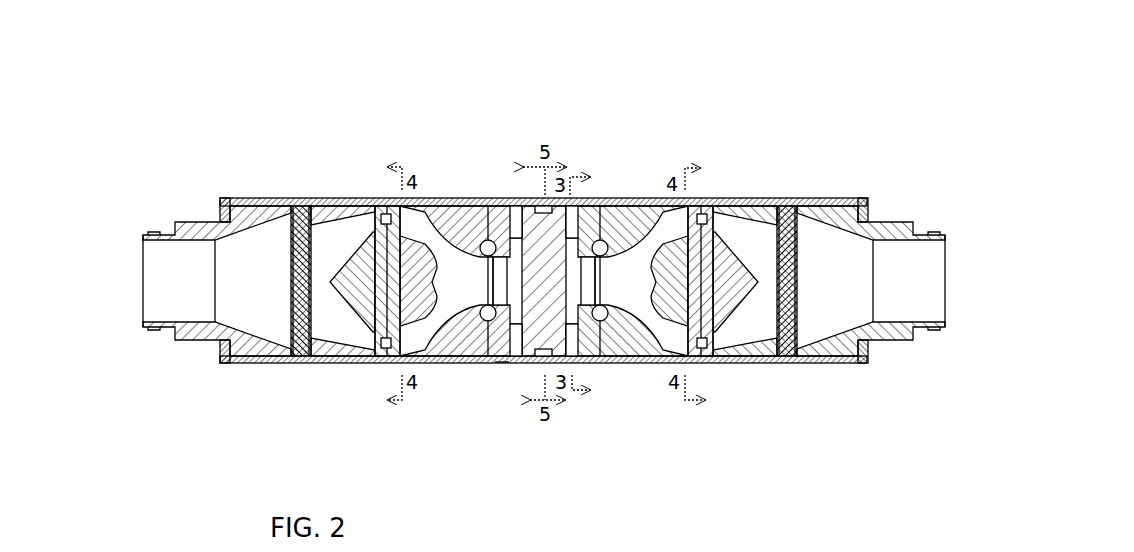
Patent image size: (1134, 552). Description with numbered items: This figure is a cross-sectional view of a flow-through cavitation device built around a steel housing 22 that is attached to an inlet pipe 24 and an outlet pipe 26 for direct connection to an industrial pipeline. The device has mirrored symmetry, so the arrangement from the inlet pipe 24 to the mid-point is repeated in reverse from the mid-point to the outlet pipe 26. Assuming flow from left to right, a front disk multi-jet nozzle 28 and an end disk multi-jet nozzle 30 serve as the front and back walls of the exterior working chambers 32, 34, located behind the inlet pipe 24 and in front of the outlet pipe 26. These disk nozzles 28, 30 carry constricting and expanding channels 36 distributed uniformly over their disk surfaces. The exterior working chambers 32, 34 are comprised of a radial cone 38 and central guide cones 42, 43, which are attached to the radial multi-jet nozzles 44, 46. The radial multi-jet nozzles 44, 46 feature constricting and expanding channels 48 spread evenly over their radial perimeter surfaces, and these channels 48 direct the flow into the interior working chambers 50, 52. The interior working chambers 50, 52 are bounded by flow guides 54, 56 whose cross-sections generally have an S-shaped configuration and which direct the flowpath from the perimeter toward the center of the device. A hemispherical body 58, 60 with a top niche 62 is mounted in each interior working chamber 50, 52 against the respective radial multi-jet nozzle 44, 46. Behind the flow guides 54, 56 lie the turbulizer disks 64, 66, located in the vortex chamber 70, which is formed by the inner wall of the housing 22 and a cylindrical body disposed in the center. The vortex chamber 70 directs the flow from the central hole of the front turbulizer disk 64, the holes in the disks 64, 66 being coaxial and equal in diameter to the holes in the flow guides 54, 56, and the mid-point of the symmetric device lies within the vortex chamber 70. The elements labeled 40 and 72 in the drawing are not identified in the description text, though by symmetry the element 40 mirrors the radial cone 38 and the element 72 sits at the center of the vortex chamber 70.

The housing 22 is at (630, 363).
The inlet pipe 24 is at (142, 232).
The outlet pipe 26 is at (935, 230).
The front disk multi-jet nozzle 28 is at (296, 345).
The end disk multi-jet nozzle 30 is at (793, 347).
The exterior working chamber 32 is at (332, 232).
The exterior working chamber 34 is at (772, 212).
The constricting and expanding channels 36 is at (288, 203).
The radial cone 38 is at (327, 347).
The second housing shoulder 40 is at (765, 347).
The central guide cone 42 is at (368, 245).
The central guide cone 43 is at (738, 213).
The radial multi-jet nozzle 44 is at (387, 343).
The radial multi-jet nozzle 46 is at (697, 348).
The constricting and expanding channels 48 is at (388, 222).
The interior working chamber 50 is at (450, 308).
The interior working chamber 52 is at (637, 308).
The flow guide 54 is at (470, 337).
The flow guide 56 is at (615, 337).
The hemispherical body 58 is at (433, 310).
The hemispherical body 60 is at (650, 308).
The top niche 62 is at (424, 206).
The turbulizer disk 64 is at (495, 210).
The turbulizer disk 66 is at (593, 210).
The vortex chamber 70 is at (502, 366).
The central block 72 is at (523, 210).